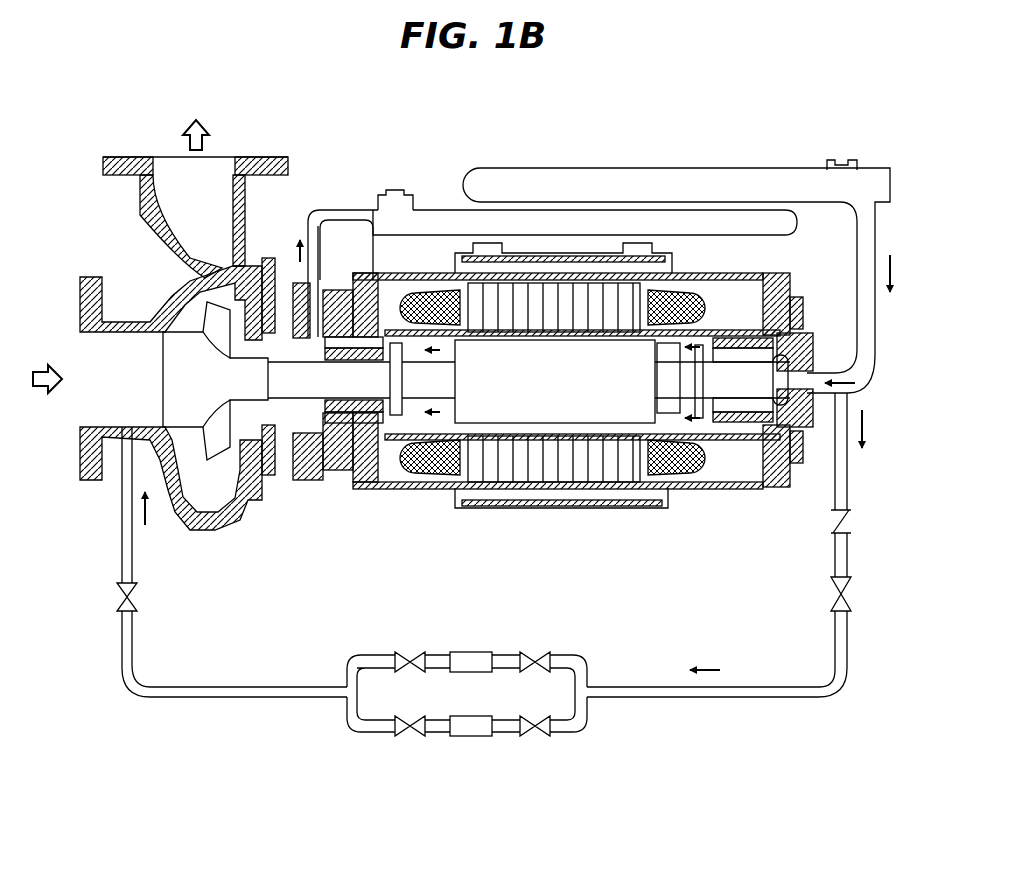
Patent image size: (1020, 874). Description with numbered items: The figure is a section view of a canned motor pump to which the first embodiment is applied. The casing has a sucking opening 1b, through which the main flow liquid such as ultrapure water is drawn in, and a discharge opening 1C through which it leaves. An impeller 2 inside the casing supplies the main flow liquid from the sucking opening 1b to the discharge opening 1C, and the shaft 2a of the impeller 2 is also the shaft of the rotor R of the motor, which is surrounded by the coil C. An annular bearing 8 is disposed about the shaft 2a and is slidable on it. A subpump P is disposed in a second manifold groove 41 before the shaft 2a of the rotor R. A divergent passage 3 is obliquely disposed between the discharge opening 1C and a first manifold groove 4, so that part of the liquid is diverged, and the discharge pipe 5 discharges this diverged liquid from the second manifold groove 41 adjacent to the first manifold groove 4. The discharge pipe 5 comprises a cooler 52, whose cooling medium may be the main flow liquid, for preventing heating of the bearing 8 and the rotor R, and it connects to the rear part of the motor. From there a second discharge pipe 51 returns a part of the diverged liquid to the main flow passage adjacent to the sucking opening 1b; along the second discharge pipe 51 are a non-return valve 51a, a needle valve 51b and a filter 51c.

The discharge opening 1C is at (218, 157).
The sucking opening 1b is at (80, 403).
The impeller 2 is at (210, 460).
The shaft 2a is at (378, 467).
The divergent passage 3 is at (283, 283).
The first manifold groove 4 is at (280, 430).
The second manifold groove 41 is at (312, 450).
The discharge pipe 5 is at (330, 210).
The annular bearing 8 is at (365, 345).
The subpump P is at (338, 348).
The rotor R is at (553, 407).
The coil C is at (575, 470).
The second discharge pipe 51 is at (848, 483).
The non-return valve 51a is at (878, 522).
The needle valve 51b is at (122, 595).
The filter 51c is at (440, 747).
The cooler 52 is at (540, 168).